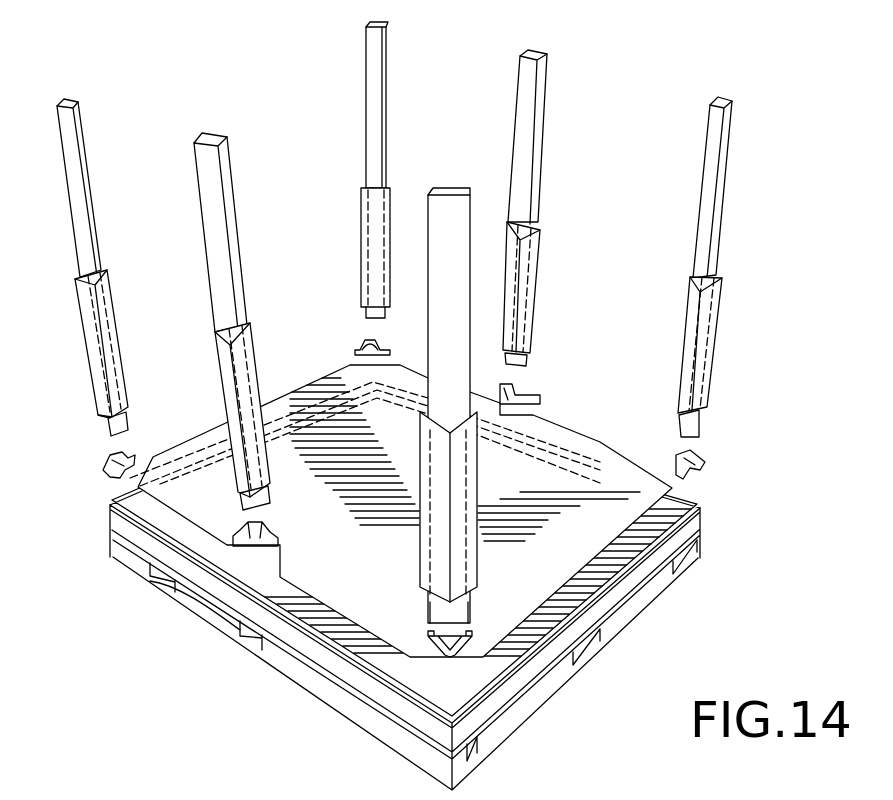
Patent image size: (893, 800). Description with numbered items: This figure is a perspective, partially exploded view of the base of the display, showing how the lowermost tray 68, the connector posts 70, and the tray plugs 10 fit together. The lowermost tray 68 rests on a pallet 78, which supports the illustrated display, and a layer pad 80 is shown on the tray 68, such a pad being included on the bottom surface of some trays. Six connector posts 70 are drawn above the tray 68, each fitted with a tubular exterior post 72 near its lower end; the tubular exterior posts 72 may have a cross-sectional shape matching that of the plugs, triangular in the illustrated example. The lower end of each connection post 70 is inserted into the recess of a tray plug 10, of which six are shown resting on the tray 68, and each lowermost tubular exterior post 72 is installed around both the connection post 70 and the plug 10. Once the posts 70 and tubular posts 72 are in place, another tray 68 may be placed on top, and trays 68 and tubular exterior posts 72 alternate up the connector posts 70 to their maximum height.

The tray plug 10 is at (362, 348).
The tray 68 is at (287, 632).
The connector post 70 is at (77, 126).
The tubular exterior post 72 is at (362, 218).
The pallet 78 is at (390, 726).
The layer pad 80 is at (399, 593).